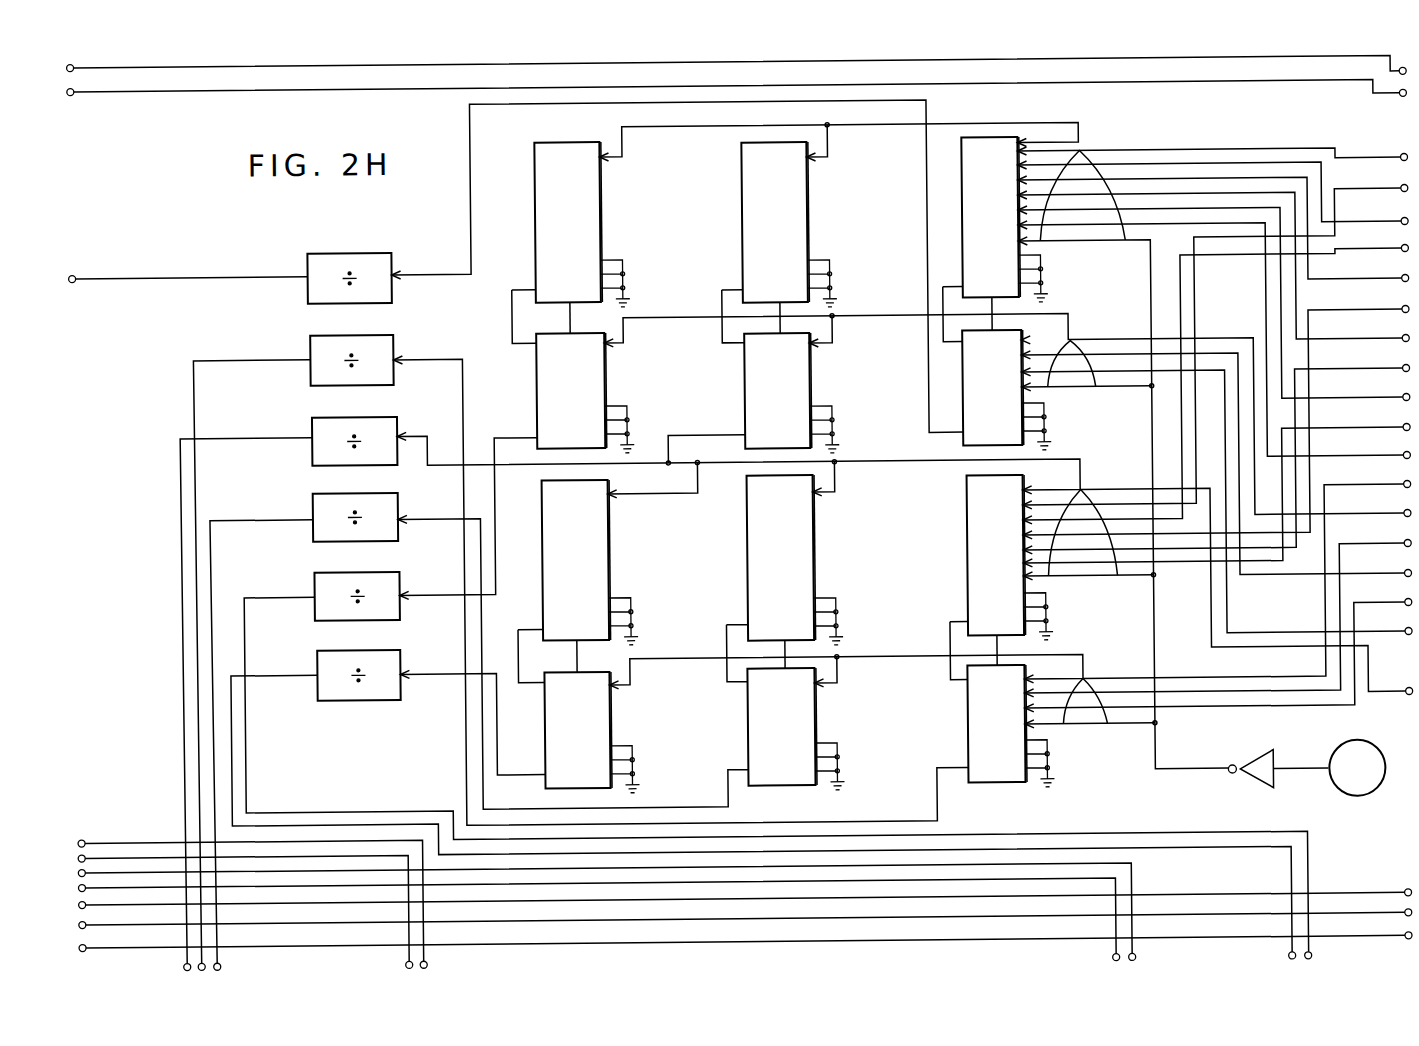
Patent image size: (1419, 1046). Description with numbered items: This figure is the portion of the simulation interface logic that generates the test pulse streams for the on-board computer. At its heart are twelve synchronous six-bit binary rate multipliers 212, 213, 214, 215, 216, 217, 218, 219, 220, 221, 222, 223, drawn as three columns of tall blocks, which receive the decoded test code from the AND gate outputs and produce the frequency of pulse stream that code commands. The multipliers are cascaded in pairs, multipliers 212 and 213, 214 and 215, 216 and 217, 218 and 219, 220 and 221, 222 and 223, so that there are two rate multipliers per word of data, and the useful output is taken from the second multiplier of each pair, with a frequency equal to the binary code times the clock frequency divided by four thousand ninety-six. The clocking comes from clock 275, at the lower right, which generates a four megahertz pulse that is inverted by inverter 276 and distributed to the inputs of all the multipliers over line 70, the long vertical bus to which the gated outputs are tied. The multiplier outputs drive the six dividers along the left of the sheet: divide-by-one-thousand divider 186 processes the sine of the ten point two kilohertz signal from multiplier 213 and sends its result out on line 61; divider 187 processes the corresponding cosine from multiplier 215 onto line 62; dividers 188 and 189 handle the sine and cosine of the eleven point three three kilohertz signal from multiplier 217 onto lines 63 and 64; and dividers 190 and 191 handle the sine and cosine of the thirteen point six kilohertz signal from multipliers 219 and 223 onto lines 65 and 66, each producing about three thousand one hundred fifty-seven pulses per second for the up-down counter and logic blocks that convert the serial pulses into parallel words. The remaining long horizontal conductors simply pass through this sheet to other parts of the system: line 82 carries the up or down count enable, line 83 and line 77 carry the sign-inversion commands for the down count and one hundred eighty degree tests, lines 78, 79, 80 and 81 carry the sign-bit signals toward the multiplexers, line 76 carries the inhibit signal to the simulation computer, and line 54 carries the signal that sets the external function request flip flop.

The line 82 is at (77, 59).
The line 83 is at (77, 83).
The line 61 is at (77, 270).
The divide-by-1000 divider 186 is at (394, 258).
The divider 187 is at (395, 348).
The divider 188 is at (397, 421).
The divider 189 is at (397, 506).
The divider 190 is at (397, 577).
The divider 191 is at (399, 656).
The line 62 is at (261, 357).
The line 63 is at (265, 433).
The line 64 is at (277, 517).
The line 65 is at (291, 593).
The line 66 is at (301, 670).
The synchronous 6-bit binary rate multiplier 220 is at (567, 147).
The synchronous 6-bit binary rate multiplier 221 is at (541, 374).
The synchronous 6-bit binary rate multiplier 222 is at (542, 505).
The synchronous 6-bit binary rate multiplier 223 is at (546, 709).
The synchronous 6-bit binary rate multiplier 216 is at (745, 158).
The synchronous 6-bit binary rate multiplier 217 is at (746, 373).
The synchronous 6-bit binary rate multiplier 218 is at (747, 506).
The synchronous 6-bit binary rate multiplier 219 is at (749, 709).
The synchronous 6-bit binary rate multiplier 212 is at (1022, 143).
The synchronous 6-bit binary rate multiplier 213 is at (1024, 340).
The synchronous 6-bit binary rate multiplier 214 is at (967, 489).
The synchronous 6-bit binary rate multiplier 215 is at (967, 707).
The line 70 is at (1148, 286).
The inverter 276 is at (1265, 752).
The clock 275 is at (1362, 752).
The line 78 is at (81, 834).
The line 79 is at (81, 849).
The line 80 is at (81, 864).
The line 81 is at (81, 879).
The line 76 is at (81, 896).
The line 54 is at (81, 916).
The line 77 is at (81, 939).